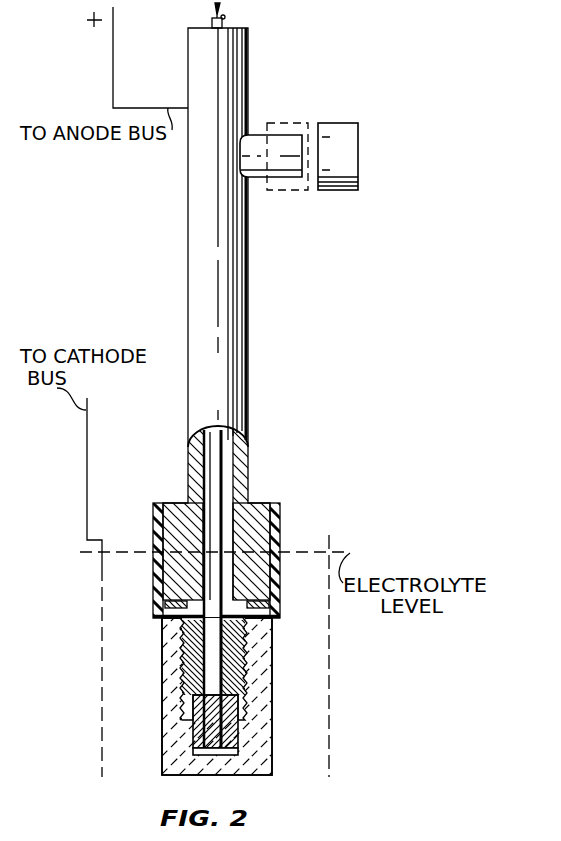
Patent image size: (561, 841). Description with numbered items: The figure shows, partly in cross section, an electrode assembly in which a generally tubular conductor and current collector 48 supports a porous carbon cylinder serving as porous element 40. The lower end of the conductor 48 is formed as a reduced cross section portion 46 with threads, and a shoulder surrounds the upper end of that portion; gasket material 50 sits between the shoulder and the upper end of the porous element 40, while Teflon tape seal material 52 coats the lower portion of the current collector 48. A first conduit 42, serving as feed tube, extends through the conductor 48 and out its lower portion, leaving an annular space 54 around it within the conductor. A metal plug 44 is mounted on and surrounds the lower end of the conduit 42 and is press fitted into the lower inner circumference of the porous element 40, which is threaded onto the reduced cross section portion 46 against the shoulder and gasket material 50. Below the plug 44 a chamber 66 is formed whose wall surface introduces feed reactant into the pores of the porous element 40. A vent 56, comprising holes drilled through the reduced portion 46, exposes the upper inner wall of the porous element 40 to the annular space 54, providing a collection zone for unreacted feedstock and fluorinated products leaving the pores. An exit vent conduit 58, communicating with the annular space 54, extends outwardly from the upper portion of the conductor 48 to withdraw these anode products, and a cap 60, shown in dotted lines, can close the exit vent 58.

The porous element 40 is at (272, 753).
The first conduit 42 is at (224, 17).
The metal plug 44 is at (197, 737).
The reduced cross section portion 46 is at (193, 678).
The tubular conductor and current collector 48 is at (188, 262).
The gasket material 50 is at (278, 584).
The Teflon tape seal material 52 is at (153, 551).
The annular space 54 is at (225, 475).
The vent 56 is at (190, 623).
The exit vent conduit 58 is at (262, 180).
The cap 60 is at (350, 123).
The chamber 66 is at (223, 752).